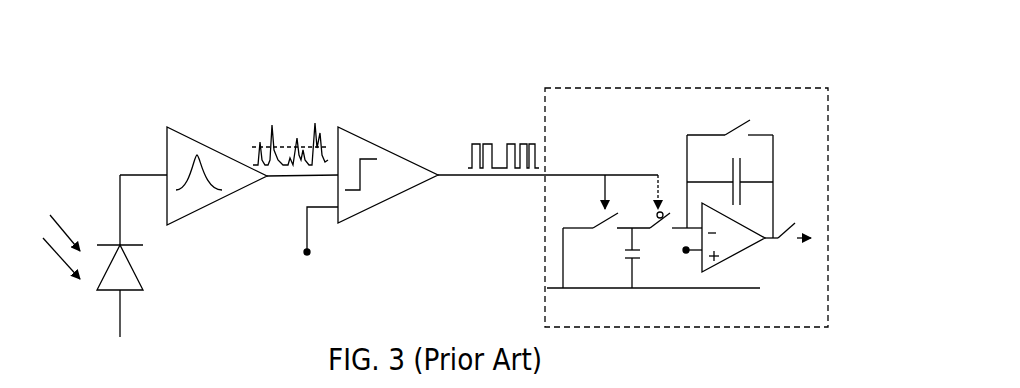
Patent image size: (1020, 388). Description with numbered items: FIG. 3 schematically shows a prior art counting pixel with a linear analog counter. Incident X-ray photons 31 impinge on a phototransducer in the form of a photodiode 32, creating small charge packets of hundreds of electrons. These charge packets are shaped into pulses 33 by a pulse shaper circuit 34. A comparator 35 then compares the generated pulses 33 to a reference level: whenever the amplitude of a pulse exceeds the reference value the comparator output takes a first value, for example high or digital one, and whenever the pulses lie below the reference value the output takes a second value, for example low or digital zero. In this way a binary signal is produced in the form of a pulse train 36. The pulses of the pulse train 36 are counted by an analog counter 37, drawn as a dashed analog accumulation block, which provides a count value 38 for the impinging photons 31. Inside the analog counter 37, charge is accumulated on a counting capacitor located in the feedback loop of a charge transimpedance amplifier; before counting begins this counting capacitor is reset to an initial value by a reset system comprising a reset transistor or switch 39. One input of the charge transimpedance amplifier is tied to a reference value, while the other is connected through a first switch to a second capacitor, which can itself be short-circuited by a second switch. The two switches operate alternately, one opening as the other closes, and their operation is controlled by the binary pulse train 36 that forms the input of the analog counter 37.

The X-ray photons 31 is at (56, 247).
The photodiode 32 is at (118, 263).
The pulses 33 is at (279, 116).
The pulse shaper circuit 34 is at (178, 155).
The comparator 35 is at (352, 153).
The pulse train 36 is at (460, 149).
The analog counter 37 is at (582, 90).
The count value 38 is at (779, 239).
The reset transistor 39 is at (732, 124).